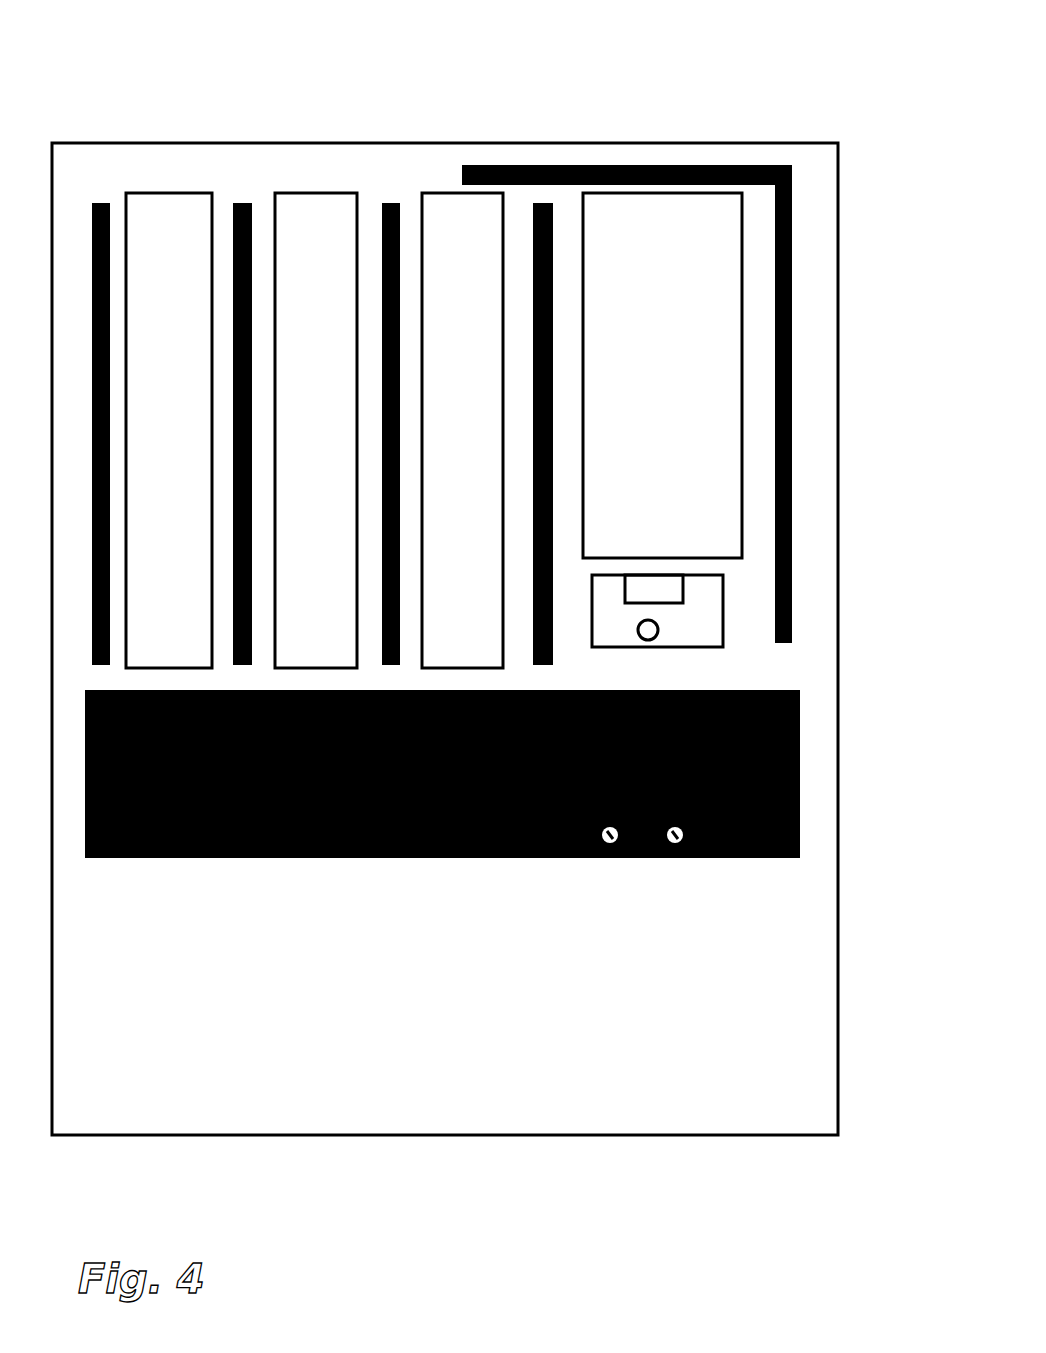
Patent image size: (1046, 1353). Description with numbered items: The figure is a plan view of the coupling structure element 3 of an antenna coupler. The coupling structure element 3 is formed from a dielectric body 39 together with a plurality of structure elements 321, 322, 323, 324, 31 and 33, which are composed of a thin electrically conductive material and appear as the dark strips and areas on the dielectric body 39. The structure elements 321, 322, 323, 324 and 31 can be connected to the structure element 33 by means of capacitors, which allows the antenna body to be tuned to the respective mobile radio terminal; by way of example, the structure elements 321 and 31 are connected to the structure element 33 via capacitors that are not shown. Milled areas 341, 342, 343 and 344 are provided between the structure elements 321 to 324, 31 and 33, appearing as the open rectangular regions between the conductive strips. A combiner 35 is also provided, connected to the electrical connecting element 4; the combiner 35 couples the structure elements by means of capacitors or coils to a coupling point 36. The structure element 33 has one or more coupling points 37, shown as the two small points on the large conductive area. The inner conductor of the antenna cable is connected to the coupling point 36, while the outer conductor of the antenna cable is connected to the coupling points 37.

The coupling structure element 3 is at (475, 137).
The electrical connecting element 4 is at (683, 587).
The structure element 31 is at (730, 164).
The structure element 33 is at (800, 770).
The combiner 35 is at (717, 613).
The coupling point 36 is at (654, 636).
The coupling points 37 is at (600, 860).
The dielectric body 39 is at (815, 918).
The structure element 321 is at (103, 195).
The structure element 322 is at (245, 193).
The structure element 323 is at (387, 193).
The structure element 324 is at (558, 207).
The milled area 341 is at (173, 212).
The milled area 342 is at (317, 213).
The milled area 343 is at (437, 203).
The milled area 344 is at (642, 208).